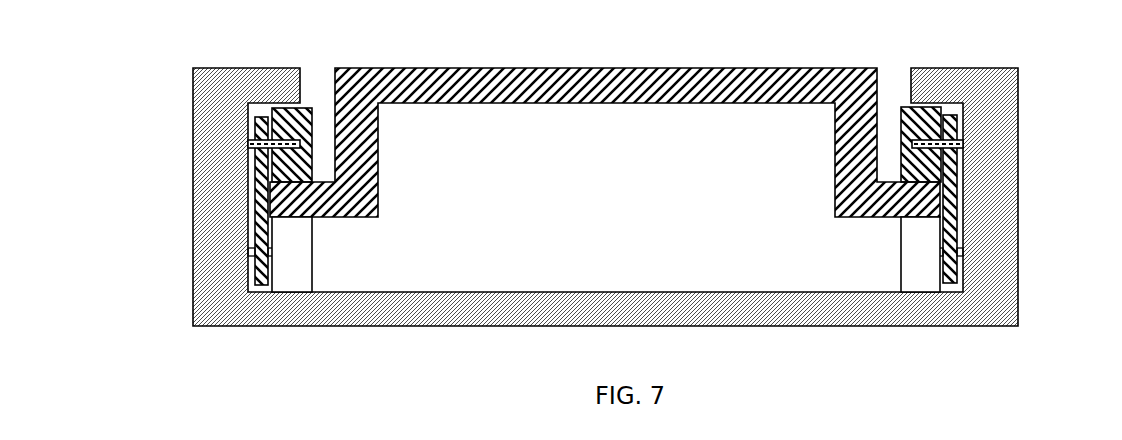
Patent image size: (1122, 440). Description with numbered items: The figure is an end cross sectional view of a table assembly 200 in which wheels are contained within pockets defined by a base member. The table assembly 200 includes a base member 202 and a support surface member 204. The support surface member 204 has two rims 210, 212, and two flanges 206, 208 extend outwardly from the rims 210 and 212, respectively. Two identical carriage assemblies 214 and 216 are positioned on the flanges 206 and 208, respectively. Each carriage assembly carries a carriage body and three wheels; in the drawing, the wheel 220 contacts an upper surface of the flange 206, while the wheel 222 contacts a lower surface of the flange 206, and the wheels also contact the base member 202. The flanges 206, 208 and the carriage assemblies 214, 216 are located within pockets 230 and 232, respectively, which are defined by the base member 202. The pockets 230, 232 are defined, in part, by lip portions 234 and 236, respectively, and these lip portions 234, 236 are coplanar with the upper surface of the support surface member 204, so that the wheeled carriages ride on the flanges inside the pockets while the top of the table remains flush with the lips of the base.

The table assembly 200 is at (102, 117).
The base member 202 is at (797, 326).
The support surface member 204 is at (585, 68).
The flange 206 is at (325, 218).
The flange 208 is at (880, 218).
The rim 210 is at (378, 163).
The rim 212 is at (835, 155).
The carriage assembly 214 is at (180, 210).
The carriage assembly 216 is at (1040, 183).
The wheel 220 is at (312, 107).
The wheel 222 is at (312, 278).
The pocket 230 is at (253, 115).
The pocket 232 is at (958, 115).
The lip portion 234 is at (282, 68).
The lip portion 236 is at (928, 68).